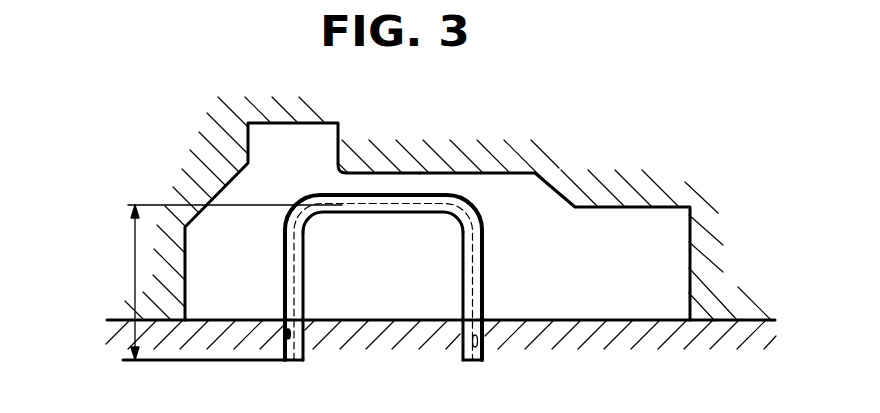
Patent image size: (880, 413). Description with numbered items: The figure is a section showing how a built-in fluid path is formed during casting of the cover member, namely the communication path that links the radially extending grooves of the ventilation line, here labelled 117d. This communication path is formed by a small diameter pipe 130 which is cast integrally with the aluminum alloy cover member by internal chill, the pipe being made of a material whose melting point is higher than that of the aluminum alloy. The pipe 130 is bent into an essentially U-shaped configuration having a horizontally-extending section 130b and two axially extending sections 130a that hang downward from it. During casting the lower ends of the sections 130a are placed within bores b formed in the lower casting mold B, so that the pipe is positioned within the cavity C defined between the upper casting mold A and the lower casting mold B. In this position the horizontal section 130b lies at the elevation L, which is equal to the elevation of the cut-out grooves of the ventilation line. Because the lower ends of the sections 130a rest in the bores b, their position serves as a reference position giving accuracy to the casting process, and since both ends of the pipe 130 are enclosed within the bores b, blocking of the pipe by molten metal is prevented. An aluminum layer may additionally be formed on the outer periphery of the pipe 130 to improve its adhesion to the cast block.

The upper casting mold A is at (227, 145).
The lower casting mold B is at (187, 330).
The cavity C is at (525, 213).
The elevation L is at (127, 282).
The ledge surface 117d is at (362, 203).
The small diameter pipe 130 is at (380, 251).
The axially extending sections 130a is at (303, 350).
The horizontally-extending section 130b is at (423, 193).
The bores b is at (285, 338).